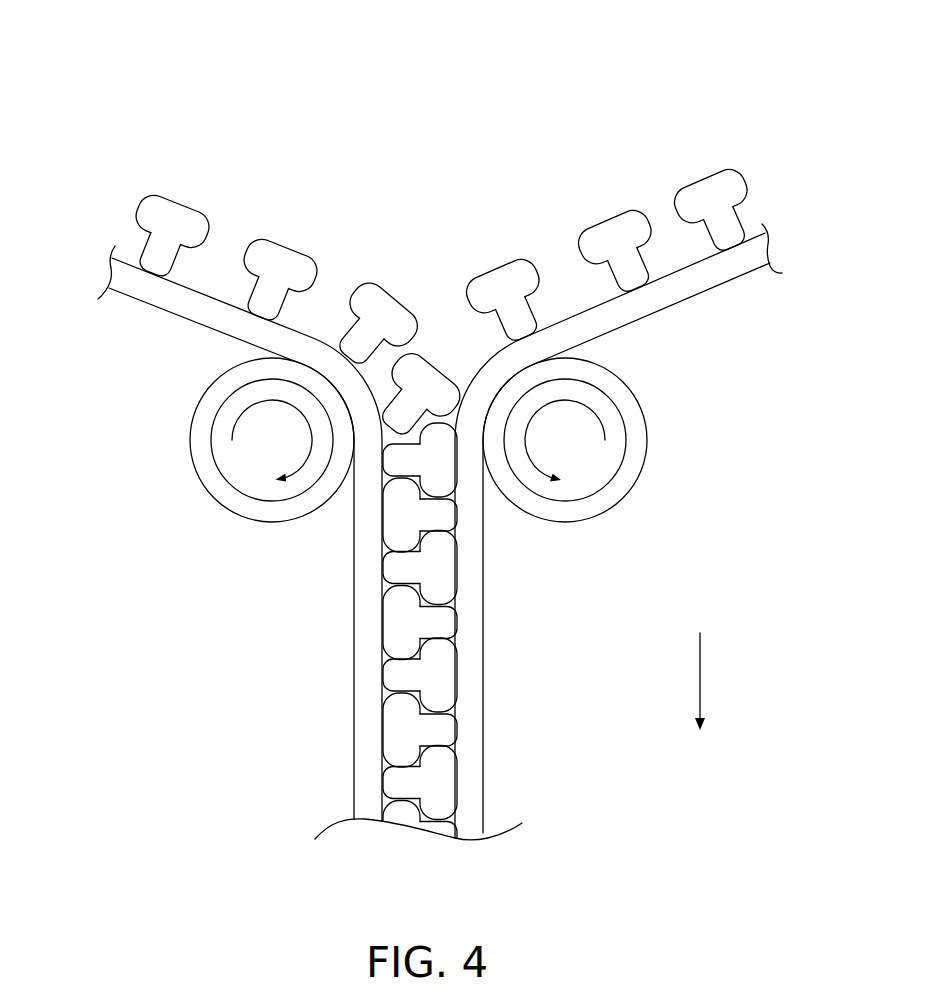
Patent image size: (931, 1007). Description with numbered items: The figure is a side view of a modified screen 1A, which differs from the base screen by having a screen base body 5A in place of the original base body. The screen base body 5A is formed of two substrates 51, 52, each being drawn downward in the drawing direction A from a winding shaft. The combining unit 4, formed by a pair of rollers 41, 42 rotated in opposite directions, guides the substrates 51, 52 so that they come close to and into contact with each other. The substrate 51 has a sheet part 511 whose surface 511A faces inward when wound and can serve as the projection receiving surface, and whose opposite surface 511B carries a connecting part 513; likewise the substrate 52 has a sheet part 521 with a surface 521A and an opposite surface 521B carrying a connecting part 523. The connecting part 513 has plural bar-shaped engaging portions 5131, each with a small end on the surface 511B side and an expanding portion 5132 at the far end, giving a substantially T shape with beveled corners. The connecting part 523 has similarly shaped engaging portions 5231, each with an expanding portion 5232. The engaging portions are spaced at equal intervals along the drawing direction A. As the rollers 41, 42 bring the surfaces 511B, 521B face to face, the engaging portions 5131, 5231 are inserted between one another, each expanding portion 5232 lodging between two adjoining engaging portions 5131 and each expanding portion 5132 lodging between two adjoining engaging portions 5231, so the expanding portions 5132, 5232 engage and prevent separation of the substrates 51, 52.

The screen 1A is at (715, 102).
The substrate 51 is at (110, 152).
The substrate 52 is at (746, 146).
The sheet part 511 is at (186, 316).
The surface 511A is at (100, 300).
The surface 511B is at (222, 301).
The sheet part 521 is at (698, 288).
The surface 521A is at (742, 278).
The surface 521B is at (607, 302).
The connecting part 513 is at (309, 137).
The engaging portion 5131 is at (168, 253).
The expanding portion 5132 is at (165, 210).
The connecting part 523 is at (576, 137).
The engaging portion 5231 is at (440, 385).
The expanding portion 5232 is at (432, 370).
The combining unit 4 is at (426, 440).
The roller 41 is at (191, 457).
The roller 42 is at (647, 442).
The screen base body 5A is at (597, 606).
The drawing direction A is at (704, 678).